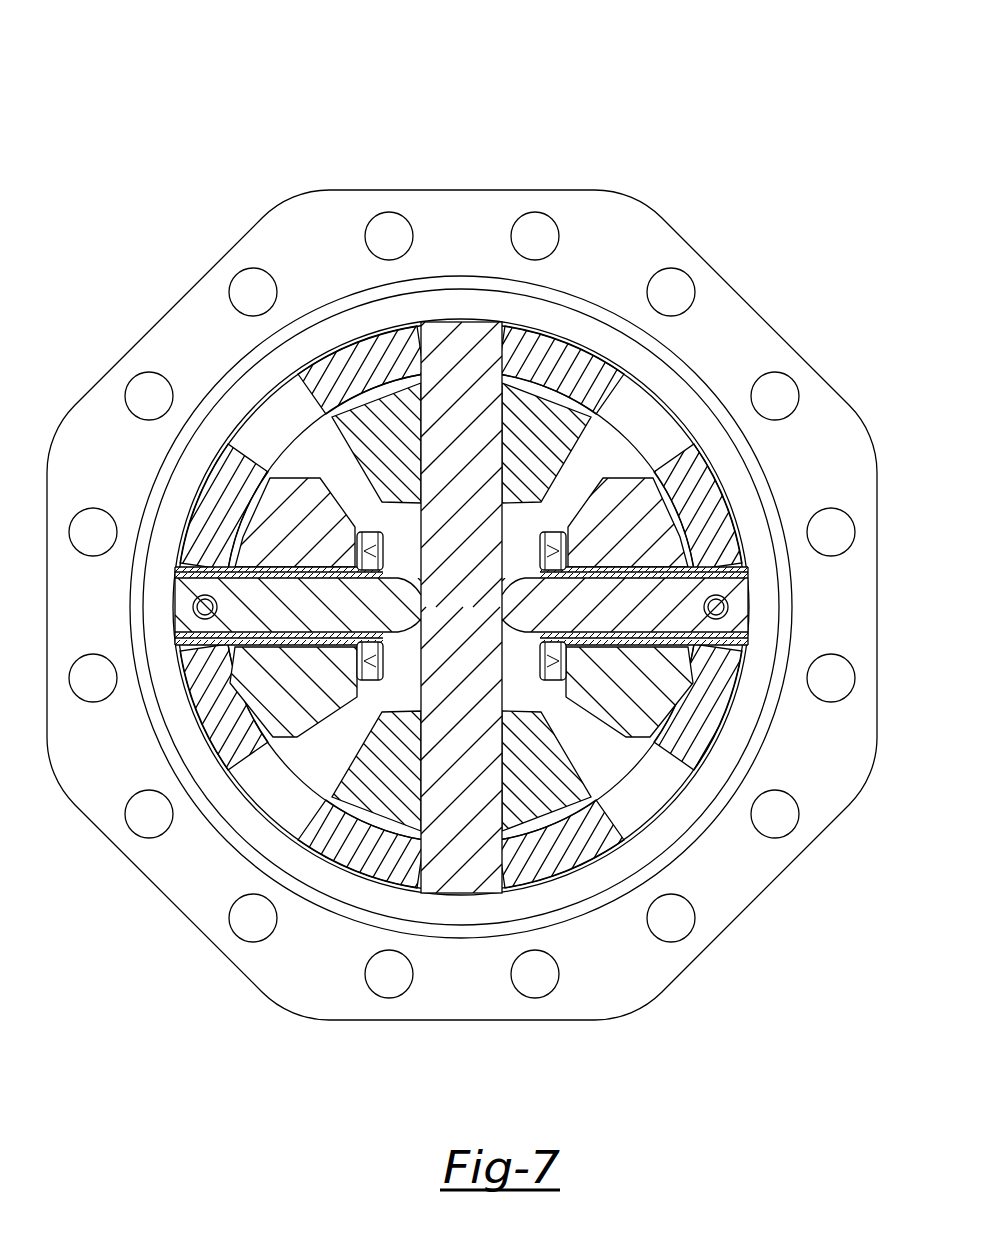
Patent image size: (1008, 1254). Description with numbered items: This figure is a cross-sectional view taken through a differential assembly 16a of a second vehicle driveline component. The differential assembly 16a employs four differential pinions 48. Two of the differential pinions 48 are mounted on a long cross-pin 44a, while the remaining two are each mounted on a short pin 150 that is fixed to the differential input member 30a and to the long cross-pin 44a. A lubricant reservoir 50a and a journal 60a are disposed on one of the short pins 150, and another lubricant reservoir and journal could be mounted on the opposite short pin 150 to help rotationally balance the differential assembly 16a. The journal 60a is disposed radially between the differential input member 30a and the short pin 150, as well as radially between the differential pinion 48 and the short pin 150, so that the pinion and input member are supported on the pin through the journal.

The differential assembly 16a is at (504, 589).
The differential input member 30a is at (748, 335).
The long cross-pin 44a is at (457, 357).
The differential pinions 48 is at (283, 712).
The lubricant reservoir 50a is at (363, 532).
The journal 60a is at (253, 642).
The short pin 150 is at (282, 601).